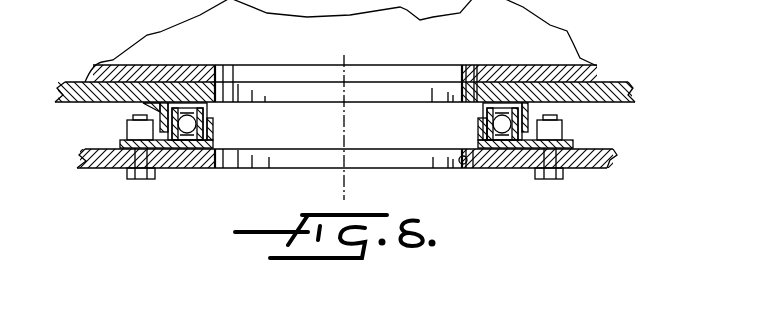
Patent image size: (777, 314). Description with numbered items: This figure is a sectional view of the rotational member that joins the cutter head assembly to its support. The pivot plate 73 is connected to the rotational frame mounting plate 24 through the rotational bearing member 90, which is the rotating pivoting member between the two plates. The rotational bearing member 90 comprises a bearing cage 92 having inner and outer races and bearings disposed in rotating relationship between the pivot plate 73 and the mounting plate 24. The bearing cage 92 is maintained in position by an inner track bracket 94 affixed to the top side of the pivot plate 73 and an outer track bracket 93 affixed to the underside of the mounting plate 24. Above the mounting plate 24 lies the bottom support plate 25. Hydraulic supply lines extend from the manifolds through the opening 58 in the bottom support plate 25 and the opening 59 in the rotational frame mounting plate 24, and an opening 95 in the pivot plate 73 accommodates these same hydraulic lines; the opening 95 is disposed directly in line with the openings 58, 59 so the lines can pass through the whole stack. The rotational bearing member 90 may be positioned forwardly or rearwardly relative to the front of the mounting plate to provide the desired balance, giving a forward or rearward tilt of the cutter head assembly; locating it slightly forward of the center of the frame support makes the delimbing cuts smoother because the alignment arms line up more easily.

The rotational frame mounting plate 24 is at (612, 83).
The bottom support plate 25 is at (537, 67).
The opening 58 is at (226, 73).
The opening 59 is at (458, 81).
The pivot plate 73 is at (118, 170).
The rotational bearing member 90 is at (128, 116).
The bearing cage 92 is at (172, 167).
The outer track bracket 93 is at (145, 102).
The inner track bracket 94 is at (213, 130).
The opening 95 is at (465, 164).